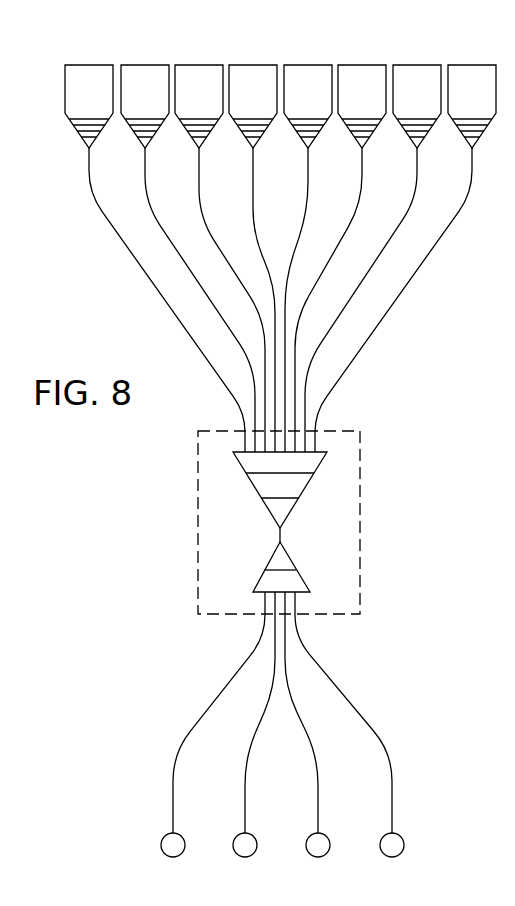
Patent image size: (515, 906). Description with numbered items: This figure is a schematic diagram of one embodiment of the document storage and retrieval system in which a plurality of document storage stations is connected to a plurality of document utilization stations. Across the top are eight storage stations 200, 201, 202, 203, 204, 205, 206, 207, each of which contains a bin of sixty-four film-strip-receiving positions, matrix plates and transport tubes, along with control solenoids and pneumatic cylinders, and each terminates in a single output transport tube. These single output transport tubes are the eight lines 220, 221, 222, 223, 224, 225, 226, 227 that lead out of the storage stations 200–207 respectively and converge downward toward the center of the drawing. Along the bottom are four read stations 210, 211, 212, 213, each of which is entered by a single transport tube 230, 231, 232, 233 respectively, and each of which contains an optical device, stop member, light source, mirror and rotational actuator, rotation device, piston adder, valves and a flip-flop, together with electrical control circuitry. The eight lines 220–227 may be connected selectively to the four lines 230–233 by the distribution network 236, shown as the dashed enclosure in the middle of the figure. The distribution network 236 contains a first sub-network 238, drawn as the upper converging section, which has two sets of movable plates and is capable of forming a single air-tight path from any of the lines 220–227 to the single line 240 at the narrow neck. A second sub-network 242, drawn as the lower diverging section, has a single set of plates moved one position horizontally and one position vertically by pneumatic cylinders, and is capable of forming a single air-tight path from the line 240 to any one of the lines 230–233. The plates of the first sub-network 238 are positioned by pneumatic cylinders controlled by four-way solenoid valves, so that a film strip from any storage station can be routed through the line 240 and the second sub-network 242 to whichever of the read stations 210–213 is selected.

The storage station 200 is at (77, 68).
The storage station 201 is at (133, 68).
The storage station 202 is at (187, 68).
The storage station 203 is at (241, 68).
The storage station 204 is at (296, 68).
The storage station 205 is at (350, 68).
The storage station 206 is at (405, 68).
The storage station 207 is at (460, 68).
The output transport tube 220 is at (89, 183).
The output transport tube 221 is at (145, 183).
The output transport tube 222 is at (199, 183).
The output transport tube 223 is at (253, 183).
The output transport tube 224 is at (308, 183).
The output transport tube 225 is at (362, 183).
The output transport tube 226 is at (417, 183).
The output transport tube 227 is at (472, 183).
The distribution network 236 is at (360, 548).
The first sub-network 238 is at (318, 466).
The single line 240 is at (282, 535).
The second sub-network 242 is at (291, 560).
The transport tube 230 is at (197, 725).
The transport tube 231 is at (259, 724).
The transport tube 232 is at (302, 722).
The transport tube 233 is at (360, 722).
The read station 210 is at (164, 838).
The read station 211 is at (236, 838).
The read station 212 is at (309, 838).
The read station 213 is at (381, 838).